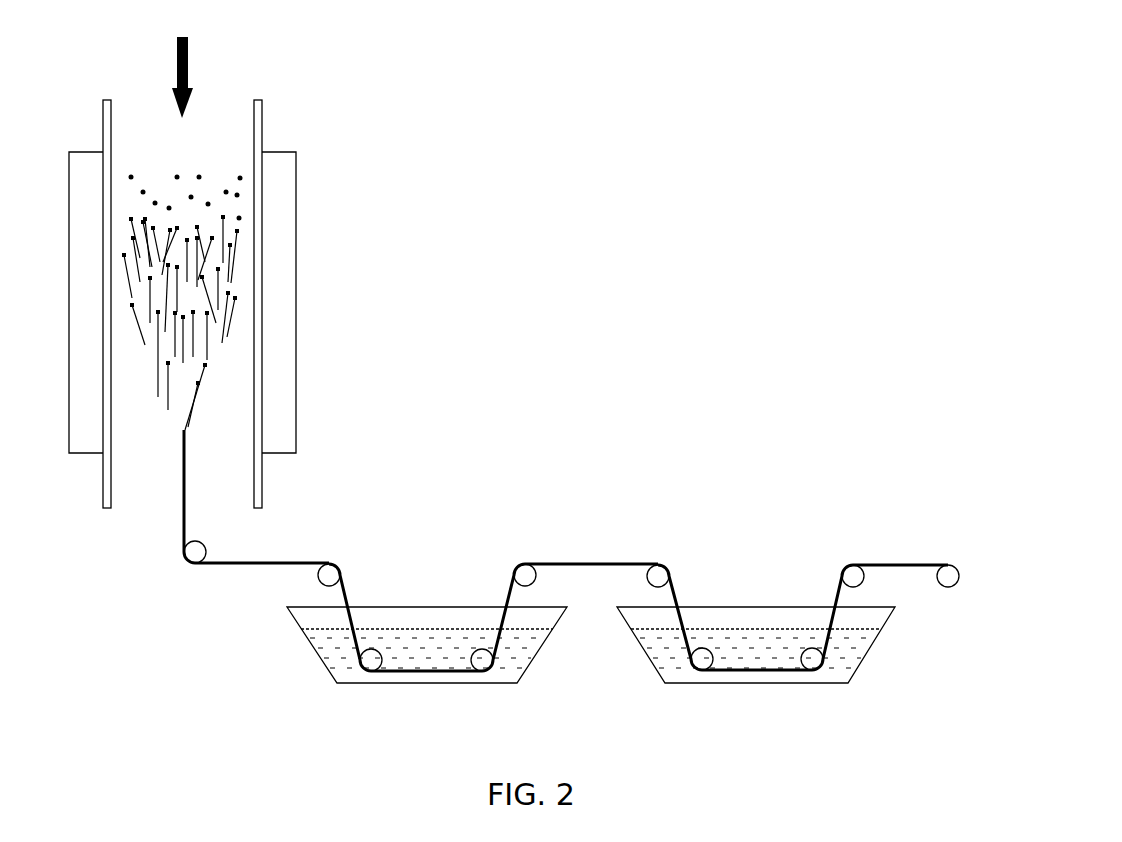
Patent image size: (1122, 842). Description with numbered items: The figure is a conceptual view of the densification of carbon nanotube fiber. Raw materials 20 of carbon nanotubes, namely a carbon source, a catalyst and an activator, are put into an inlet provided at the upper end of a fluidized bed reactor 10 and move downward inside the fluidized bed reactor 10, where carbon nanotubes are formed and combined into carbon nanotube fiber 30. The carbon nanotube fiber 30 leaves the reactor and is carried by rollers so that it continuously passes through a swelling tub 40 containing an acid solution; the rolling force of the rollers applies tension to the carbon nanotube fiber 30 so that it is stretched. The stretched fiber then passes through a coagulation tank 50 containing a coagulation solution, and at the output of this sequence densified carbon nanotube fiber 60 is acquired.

The fluidized bed reactor 10 is at (282, 201).
The raw materials 20 is at (213, 105).
The carbon nanotube fiber 30 is at (245, 567).
The swelling tub 40 is at (422, 683).
The coagulation tank 50 is at (757, 683).
The densified carbon nanotube fiber 60 is at (948, 570).